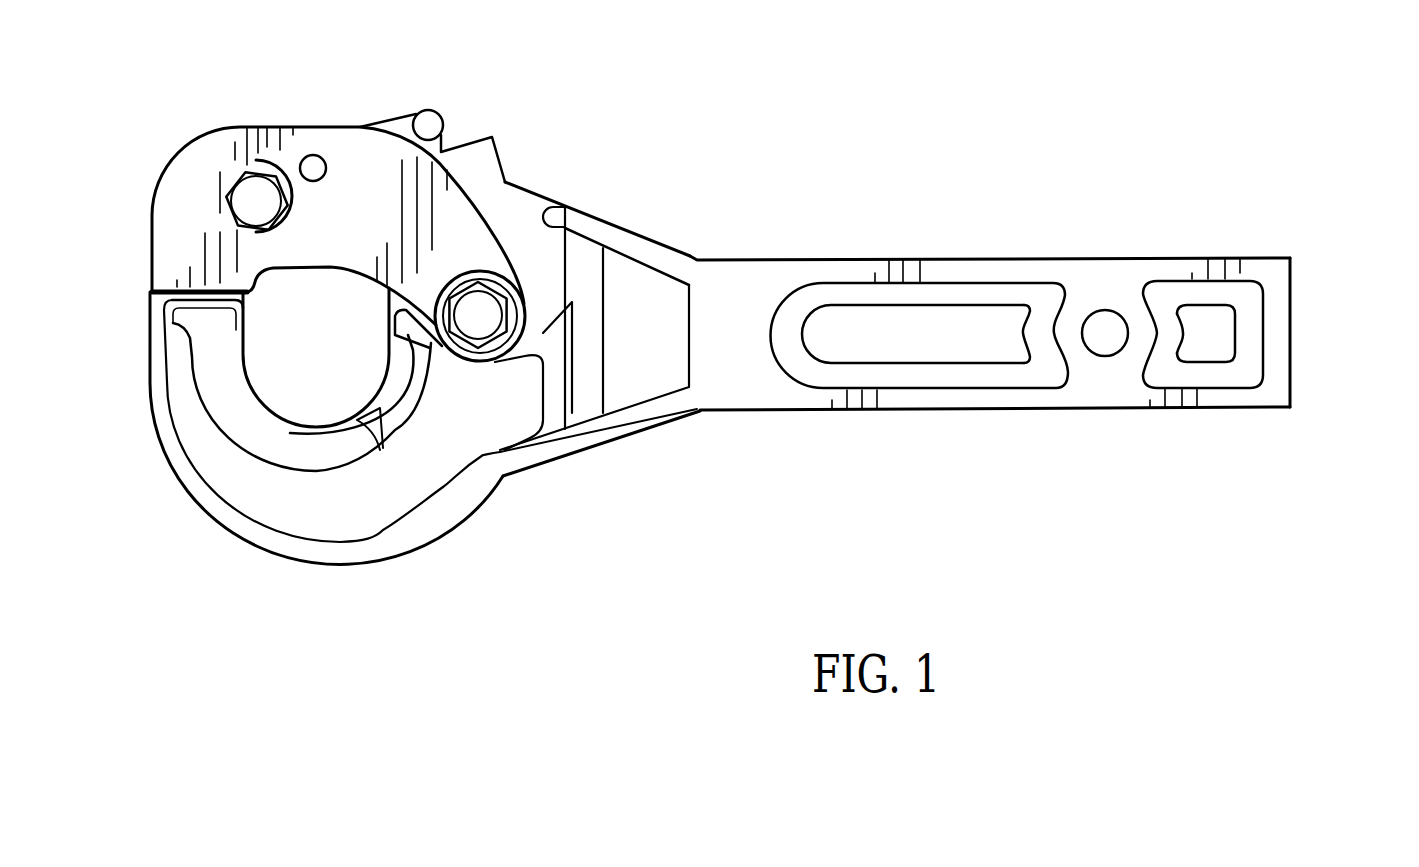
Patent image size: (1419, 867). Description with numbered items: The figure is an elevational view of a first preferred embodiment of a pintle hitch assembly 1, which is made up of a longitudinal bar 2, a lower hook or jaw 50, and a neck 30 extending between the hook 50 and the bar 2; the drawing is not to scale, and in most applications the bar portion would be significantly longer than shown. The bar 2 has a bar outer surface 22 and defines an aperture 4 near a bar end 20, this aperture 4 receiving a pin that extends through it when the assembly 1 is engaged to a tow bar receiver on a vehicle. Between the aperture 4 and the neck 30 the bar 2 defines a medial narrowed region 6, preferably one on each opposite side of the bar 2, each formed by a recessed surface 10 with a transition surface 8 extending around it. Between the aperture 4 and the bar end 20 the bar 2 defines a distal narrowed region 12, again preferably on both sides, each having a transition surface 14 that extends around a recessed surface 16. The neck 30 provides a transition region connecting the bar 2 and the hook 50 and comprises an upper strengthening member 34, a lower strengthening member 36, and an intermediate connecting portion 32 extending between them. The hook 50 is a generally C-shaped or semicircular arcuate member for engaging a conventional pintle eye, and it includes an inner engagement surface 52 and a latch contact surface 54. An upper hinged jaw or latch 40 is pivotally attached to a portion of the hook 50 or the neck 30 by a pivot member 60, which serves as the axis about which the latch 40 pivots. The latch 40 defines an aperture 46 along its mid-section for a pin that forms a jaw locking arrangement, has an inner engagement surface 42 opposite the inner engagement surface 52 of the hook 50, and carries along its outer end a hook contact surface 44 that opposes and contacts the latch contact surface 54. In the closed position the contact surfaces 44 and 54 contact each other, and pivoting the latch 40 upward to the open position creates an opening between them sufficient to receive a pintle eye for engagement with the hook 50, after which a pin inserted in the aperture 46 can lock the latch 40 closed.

The pintle hitch assembly 1 is at (1217, 128).
The longitudinal bar 2 is at (1013, 270).
The aperture 4 is at (1098, 330).
The medial narrowed region 6 is at (877, 353).
The transition surface 8 is at (945, 375).
The recessed surface 10 is at (1000, 353).
The distal narrowed region 12 is at (1195, 343).
The transition surface 14 is at (1245, 363).
The recessed surface 16 is at (1197, 317).
The bar end 20 is at (1292, 330).
The bar outer surface 22 is at (807, 270).
The neck 30 is at (593, 229).
The intermediate connecting portion 32 is at (643, 375).
The upper strengthening member 34 is at (660, 255).
The lower strengthening member 36 is at (700, 412).
The latch 40 is at (238, 143).
The inner engagement surface 42 is at (323, 280).
The hook contact surface 44 is at (157, 292).
The aperture 46 is at (313, 154).
The hook 50 is at (342, 520).
The inner engagement surface 52 is at (287, 418).
The latch contact surface 54 is at (157, 297).
The pivot member 60 is at (481, 302).